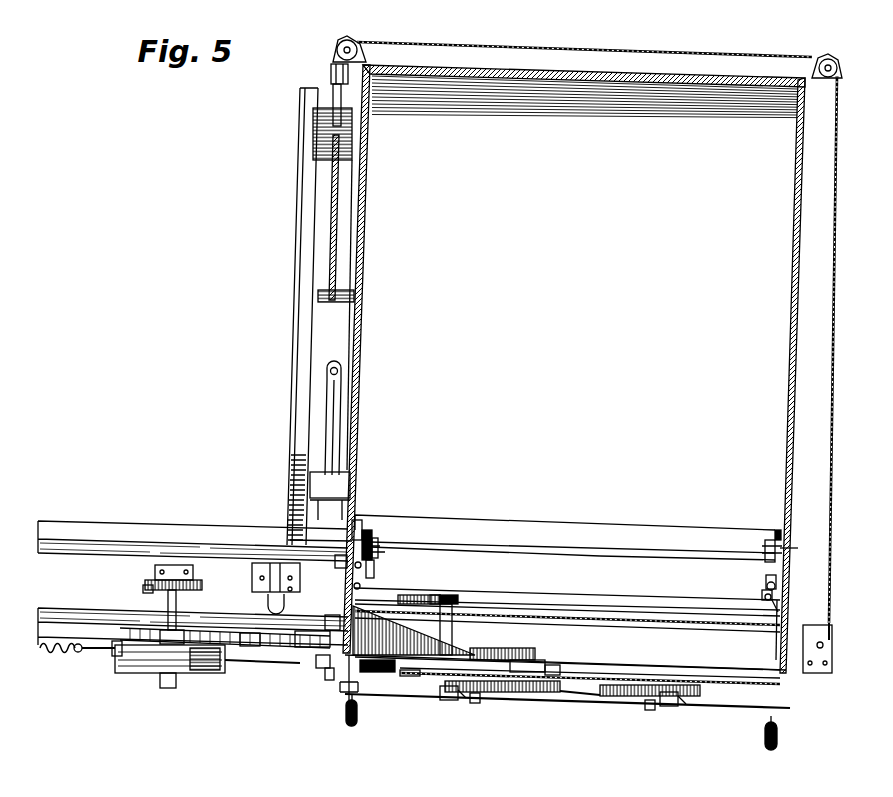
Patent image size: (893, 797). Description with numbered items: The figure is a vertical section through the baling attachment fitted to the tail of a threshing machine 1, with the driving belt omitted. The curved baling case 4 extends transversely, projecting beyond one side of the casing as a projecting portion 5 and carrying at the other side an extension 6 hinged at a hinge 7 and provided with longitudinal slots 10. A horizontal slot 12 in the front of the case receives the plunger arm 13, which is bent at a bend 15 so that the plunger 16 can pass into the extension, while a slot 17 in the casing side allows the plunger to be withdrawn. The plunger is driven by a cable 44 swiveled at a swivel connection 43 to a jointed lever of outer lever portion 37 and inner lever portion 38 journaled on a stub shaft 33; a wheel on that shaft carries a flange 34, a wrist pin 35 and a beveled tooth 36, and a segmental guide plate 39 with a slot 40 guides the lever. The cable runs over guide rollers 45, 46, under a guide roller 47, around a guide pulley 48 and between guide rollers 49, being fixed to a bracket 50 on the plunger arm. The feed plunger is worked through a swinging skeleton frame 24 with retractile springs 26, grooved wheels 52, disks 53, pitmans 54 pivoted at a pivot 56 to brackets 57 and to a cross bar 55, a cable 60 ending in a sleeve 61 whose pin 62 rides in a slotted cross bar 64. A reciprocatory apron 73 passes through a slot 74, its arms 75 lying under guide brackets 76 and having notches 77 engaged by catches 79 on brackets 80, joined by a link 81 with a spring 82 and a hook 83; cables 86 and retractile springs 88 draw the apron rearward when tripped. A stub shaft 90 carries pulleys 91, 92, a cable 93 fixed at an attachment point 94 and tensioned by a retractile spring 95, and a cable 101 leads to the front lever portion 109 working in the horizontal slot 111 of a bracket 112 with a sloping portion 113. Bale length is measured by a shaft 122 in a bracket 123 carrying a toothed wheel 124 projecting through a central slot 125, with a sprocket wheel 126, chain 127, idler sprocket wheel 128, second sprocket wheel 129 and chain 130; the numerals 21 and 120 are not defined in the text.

The threshing machine 1 is at (574, 369).
The baling case 4 is at (567, 590).
The projecting portion 5 is at (788, 553).
The extension 6 is at (193, 527).
The hinge 7 is at (357, 527).
The longitudinal slots 10 is at (108, 540).
The horizontal slot 12 is at (645, 618).
The plunger arm 13 is at (450, 595).
The bend 15 is at (436, 595).
The plunger 16 is at (416, 595).
The slot 17 is at (775, 614).
The board 21 is at (556, 524).
The swinging skeleton frame 24 is at (345, 712).
The retractile springs 26 is at (354, 727).
The stub shaft 33 is at (293, 316).
The flange 34 is at (318, 296).
The wrist pin 35 is at (290, 492).
The beveled tooth 36 is at (288, 513).
The outer lever portion 37 is at (326, 447).
The inner lever portion 38 is at (328, 355).
The segmental guide plate 39 is at (345, 213).
The slot 40 is at (318, 150).
The swivel connection 43 is at (290, 540).
The cable 44 is at (572, 639).
The guide rollers 45 is at (330, 73).
The guide rollers 46 is at (355, 42).
The guide roller 47 is at (815, 632).
The guide pulley 48 is at (268, 602).
The guide rollers 49 is at (252, 583).
The bracket 50 is at (452, 630).
The grooved wheels 52 is at (760, 705).
The disks 53 is at (500, 693).
The pitmans 54 is at (447, 700).
The cross bar 55 is at (589, 699).
The pivot 56 is at (476, 703).
The brackets 57 is at (462, 699).
The cable 60 is at (576, 668).
The sleeve 61 is at (540, 664).
The pin 62 is at (516, 658).
The cross bar 64 is at (666, 666).
The reciprocatory apron 73 is at (609, 556).
The slot 74 is at (652, 558).
The arms 75 is at (380, 546).
The guide brackets 76 is at (370, 534).
The notches 77 is at (378, 541).
The catches 79 is at (362, 586).
The brackets 80 is at (374, 570).
The link 81 is at (513, 592).
The spring 82 is at (762, 588).
The hook 83 is at (776, 606).
The cables 86 is at (386, 552).
The retractile springs 88 is at (362, 564).
The stub shaft 90 is at (169, 690).
The pulley 91 is at (112, 658).
The pulley 92 is at (120, 674).
The cable 93 is at (97, 655).
The attachment point 94 is at (210, 673).
The retractile spring 95 is at (58, 655).
The cable 101 is at (256, 665).
The front lever portion 109 is at (346, 678).
The horizontal slot 111 is at (472, 652).
The bracket 112 is at (414, 630).
The sloping portion 113 is at (390, 673).
The bracket 120 is at (338, 568).
The shaft 122 is at (168, 605).
The bracket 123 is at (158, 568).
The toothed wheel 124 is at (146, 585).
The central slot 125 is at (143, 590).
The sprocket wheel 126 is at (160, 636).
The chain 127 is at (258, 646).
The idler sprocket wheel 128 is at (300, 647).
The second sprocket wheel 129 is at (316, 666).
The chain 130 is at (325, 680).